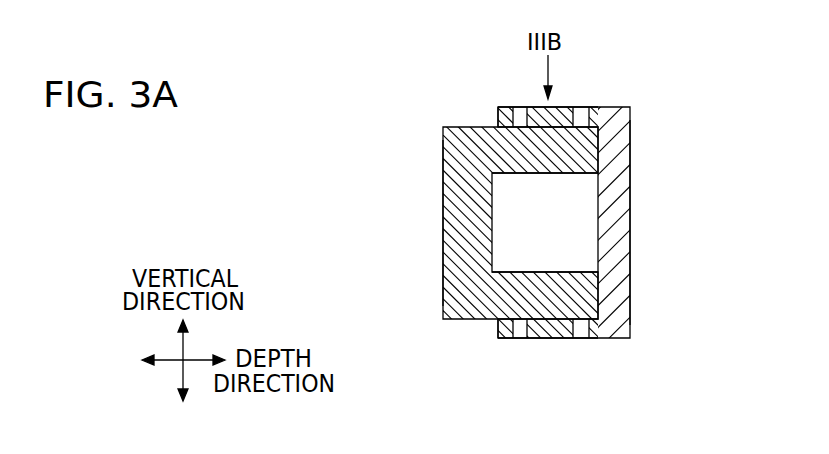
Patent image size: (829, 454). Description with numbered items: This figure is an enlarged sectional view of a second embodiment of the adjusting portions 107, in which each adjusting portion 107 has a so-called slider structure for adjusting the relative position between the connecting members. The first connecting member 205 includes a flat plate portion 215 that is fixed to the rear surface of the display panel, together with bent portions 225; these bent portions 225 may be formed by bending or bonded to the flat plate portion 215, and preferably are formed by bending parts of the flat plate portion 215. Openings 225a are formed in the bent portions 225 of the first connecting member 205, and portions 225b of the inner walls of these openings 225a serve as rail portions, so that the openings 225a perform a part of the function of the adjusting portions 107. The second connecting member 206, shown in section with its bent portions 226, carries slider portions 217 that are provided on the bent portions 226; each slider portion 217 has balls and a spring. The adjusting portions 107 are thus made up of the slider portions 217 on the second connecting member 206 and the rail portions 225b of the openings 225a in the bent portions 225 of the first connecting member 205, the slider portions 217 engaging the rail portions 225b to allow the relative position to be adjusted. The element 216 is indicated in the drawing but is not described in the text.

The adjusting portion 107 is at (747, 63).
The first connecting member 205 is at (644, 255).
The second connecting member 206 is at (432, 193).
The flat plate portion 215 is at (623, 223).
The side wall 216 is at (468, 243).
The slider portion 217 is at (567, 110).
The bent portion 225 is at (497, 112).
The opening 225a is at (583, 110).
The rail portion 225b is at (665, 224).
The bent portion 226 is at (577, 152).